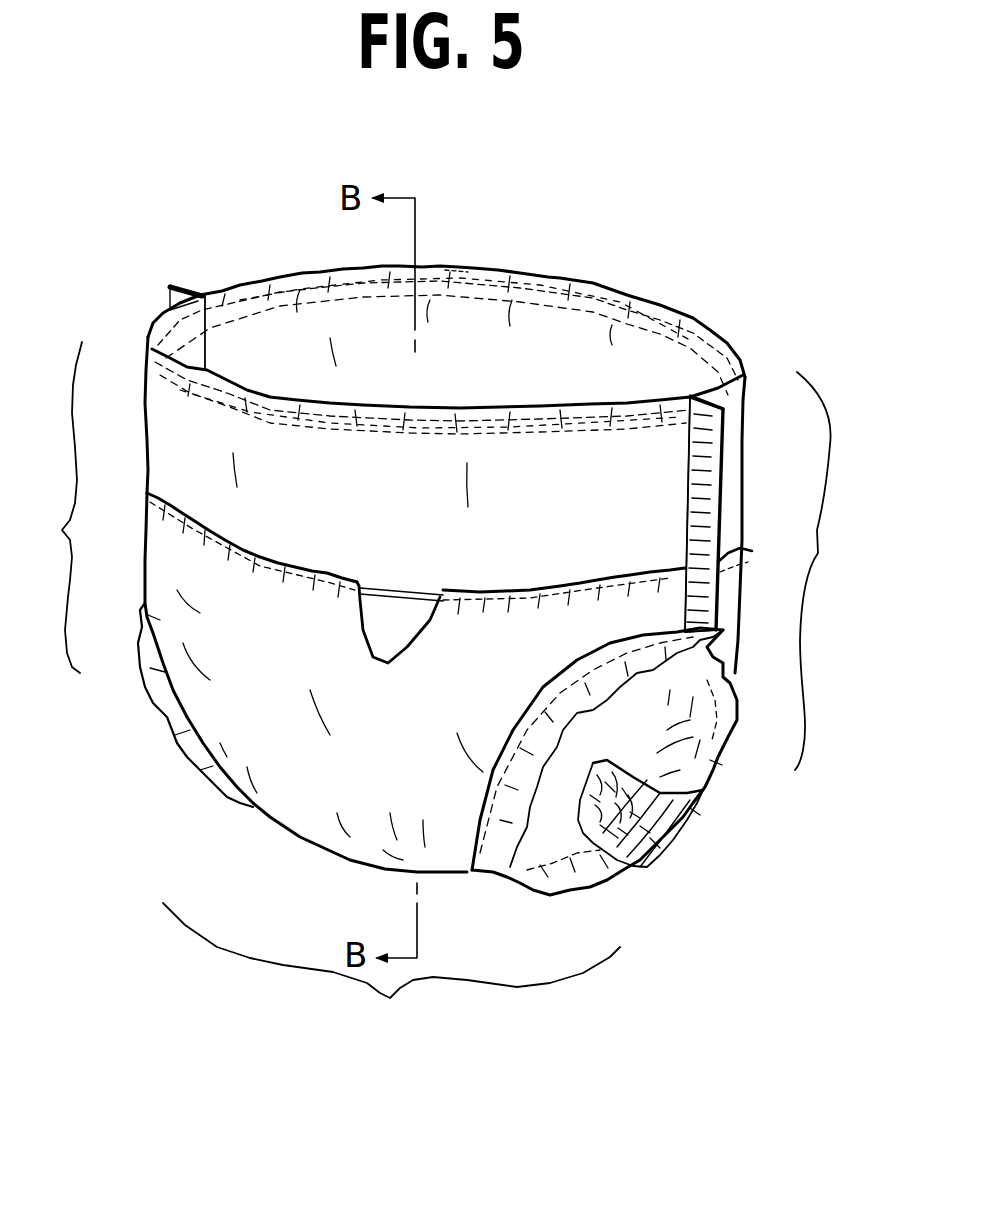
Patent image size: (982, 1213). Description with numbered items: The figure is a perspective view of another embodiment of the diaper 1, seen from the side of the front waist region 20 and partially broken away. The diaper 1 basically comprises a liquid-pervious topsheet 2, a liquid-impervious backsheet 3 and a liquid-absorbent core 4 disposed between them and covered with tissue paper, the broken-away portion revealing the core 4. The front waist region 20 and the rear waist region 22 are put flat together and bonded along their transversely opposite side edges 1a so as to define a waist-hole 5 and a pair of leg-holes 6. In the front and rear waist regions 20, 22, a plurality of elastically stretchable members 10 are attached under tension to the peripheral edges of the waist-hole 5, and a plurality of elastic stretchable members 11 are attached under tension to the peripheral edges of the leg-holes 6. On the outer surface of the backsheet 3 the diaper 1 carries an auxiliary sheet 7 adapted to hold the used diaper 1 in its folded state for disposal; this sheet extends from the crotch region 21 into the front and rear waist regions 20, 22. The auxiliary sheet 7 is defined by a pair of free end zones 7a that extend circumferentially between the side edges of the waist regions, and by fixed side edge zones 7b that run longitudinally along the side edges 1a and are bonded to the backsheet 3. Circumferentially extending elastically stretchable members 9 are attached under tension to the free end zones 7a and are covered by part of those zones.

The diaper 1 is at (648, 288).
The side edges 1a is at (167, 295).
The liquid-pervious topsheet 2 is at (707, 793).
The liquid-impervious backsheet 3 is at (660, 477).
The liquid-absorbent core 4 is at (640, 867).
The waist-hole 5 is at (502, 327).
The leg-holes 6 is at (157, 730).
The auxiliary sheet 7 is at (330, 782).
The free end zones 7a is at (313, 587).
The fixed side edge zones 7b is at (147, 603).
The elastically stretchable members 9 is at (403, 590).
The elastically stretchable members 10 is at (468, 268).
The elastic stretchable members 11 is at (673, 853).
The front waist region 20 is at (48, 507).
The crotch region 21 is at (391, 972).
The rear waist region 22 is at (826, 571).